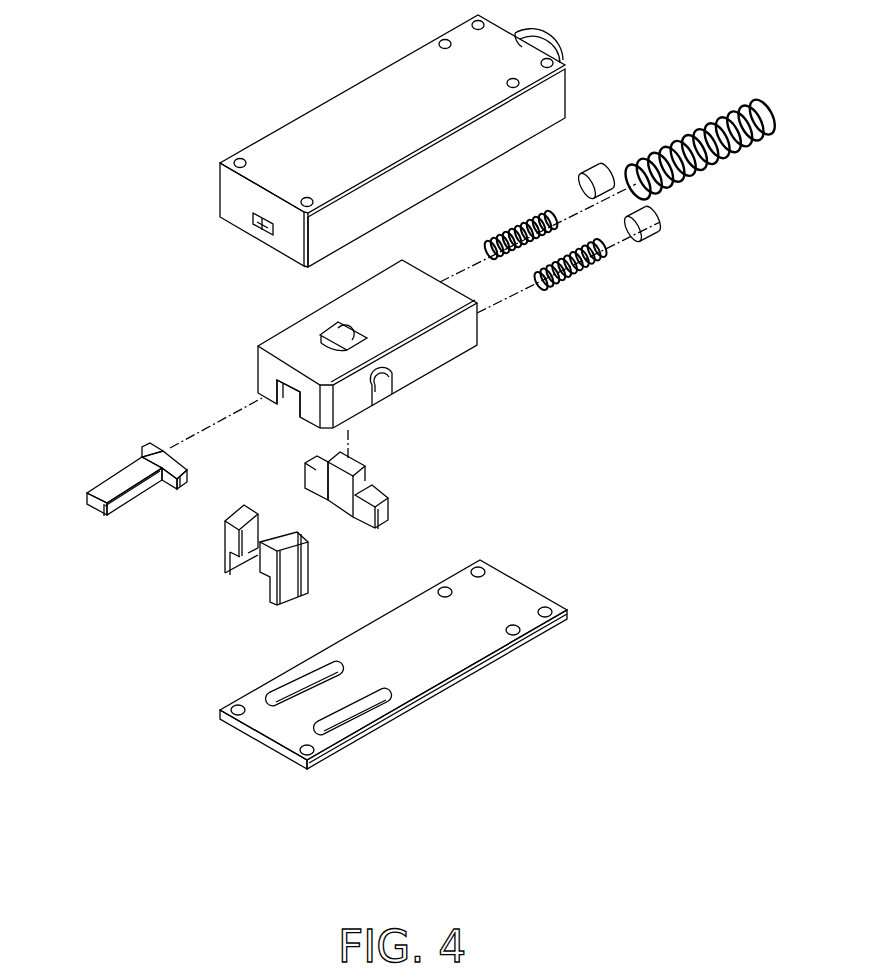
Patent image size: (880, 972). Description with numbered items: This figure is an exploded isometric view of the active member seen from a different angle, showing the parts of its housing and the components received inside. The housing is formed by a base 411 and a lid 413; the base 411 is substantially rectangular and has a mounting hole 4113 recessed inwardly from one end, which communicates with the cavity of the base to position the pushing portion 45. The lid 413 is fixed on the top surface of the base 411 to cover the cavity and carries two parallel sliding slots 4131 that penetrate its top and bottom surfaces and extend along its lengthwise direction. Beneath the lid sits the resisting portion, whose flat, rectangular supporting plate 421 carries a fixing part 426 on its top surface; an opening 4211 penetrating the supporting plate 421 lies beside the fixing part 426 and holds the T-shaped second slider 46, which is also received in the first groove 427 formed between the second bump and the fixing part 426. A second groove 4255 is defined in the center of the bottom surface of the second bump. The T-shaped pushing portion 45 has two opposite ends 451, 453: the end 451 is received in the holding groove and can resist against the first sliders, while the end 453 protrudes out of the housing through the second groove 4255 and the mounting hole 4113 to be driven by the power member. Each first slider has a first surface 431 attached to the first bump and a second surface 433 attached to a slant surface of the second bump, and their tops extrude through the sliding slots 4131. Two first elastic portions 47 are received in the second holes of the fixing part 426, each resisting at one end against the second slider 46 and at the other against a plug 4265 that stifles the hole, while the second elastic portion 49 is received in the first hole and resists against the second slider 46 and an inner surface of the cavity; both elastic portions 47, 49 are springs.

The base 411 is at (333, 118).
The mounting hole 4113 is at (265, 222).
The supporting plate 421 is at (280, 348).
The opening 4211 is at (327, 332).
The fixing part 426 is at (457, 343).
The first groove 427 is at (377, 393).
The second groove 4255 is at (293, 398).
The pushing portion 45 is at (125, 480).
The end of pushing portion 451 is at (155, 450).
The end of pushing portion 453 is at (92, 513).
The second slider 46 is at (378, 490).
The first surface 431 is at (268, 535).
The second surface 433 is at (288, 580).
The lid 413 is at (502, 600).
The sliding slot 4131 is at (290, 697).
The plug 4265 is at (600, 177).
The first elastic portion 47 is at (593, 258).
The second elastic portion 49 is at (662, 190).